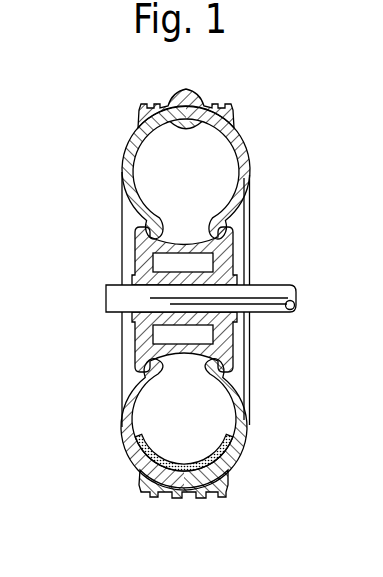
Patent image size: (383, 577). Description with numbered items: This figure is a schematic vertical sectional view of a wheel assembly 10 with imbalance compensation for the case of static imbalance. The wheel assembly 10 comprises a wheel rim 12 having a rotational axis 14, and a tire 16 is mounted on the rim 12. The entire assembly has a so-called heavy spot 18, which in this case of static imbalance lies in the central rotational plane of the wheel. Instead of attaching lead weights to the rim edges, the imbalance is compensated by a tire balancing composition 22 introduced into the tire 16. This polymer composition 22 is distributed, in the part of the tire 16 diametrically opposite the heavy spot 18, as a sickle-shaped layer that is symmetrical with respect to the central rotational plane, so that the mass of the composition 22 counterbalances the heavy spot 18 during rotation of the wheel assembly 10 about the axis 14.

The wheel assembly 10 is at (116, 171).
The wheel rim 12 is at (234, 330).
The rotational axis 14 is at (273, 284).
The tire 16 is at (118, 433).
The heavy spot 18 is at (198, 89).
The tire balancing composition 22 is at (232, 465).